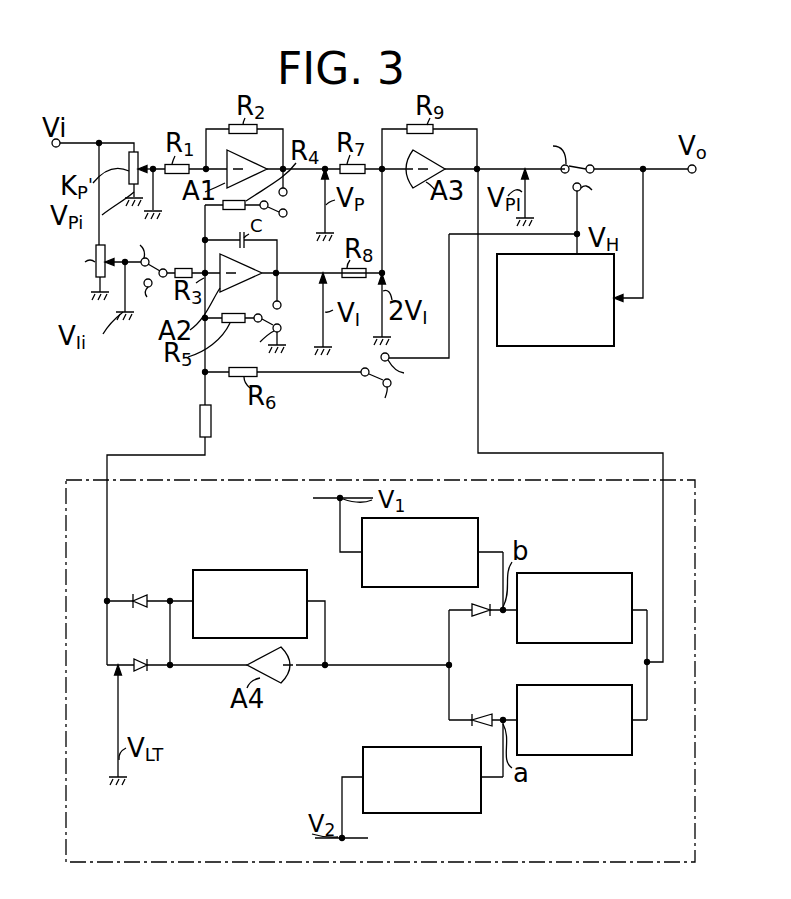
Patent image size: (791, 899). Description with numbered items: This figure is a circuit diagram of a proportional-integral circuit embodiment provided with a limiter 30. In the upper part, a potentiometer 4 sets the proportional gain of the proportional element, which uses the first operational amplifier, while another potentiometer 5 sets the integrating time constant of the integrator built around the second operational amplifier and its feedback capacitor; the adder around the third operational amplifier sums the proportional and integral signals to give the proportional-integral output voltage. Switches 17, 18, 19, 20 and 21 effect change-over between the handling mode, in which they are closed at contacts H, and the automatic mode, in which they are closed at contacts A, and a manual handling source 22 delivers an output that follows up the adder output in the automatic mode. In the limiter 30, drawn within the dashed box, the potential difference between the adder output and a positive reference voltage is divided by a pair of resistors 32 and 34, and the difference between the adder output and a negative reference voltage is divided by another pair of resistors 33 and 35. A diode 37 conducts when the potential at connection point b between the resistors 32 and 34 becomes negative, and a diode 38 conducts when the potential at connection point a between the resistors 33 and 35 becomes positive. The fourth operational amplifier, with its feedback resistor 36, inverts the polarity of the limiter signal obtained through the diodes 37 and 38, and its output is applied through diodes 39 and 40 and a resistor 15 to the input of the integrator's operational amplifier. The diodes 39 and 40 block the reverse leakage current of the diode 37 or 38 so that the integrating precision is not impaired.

The potentiometer 4 is at (138, 163).
The potentiometer 5 is at (96, 290).
The resistor 15 is at (211, 410).
The switch 17 is at (149, 262).
The switch 18 is at (287, 209).
The switch 19 is at (264, 320).
The switch 20 is at (366, 377).
The switch 21 is at (588, 165).
The manual handling source 22 is at (614, 325).
The limiter 30 is at (375, 481).
The resistor 32 is at (583, 573).
The resistor 33 is at (590, 757).
The resistor 34 is at (477, 518).
The resistor 35 is at (460, 813).
The feedback resistor 36 is at (275, 570).
The diode 37 is at (470, 607).
The diode 38 is at (478, 716).
The diode 39 is at (142, 596).
The diode 40 is at (137, 660).